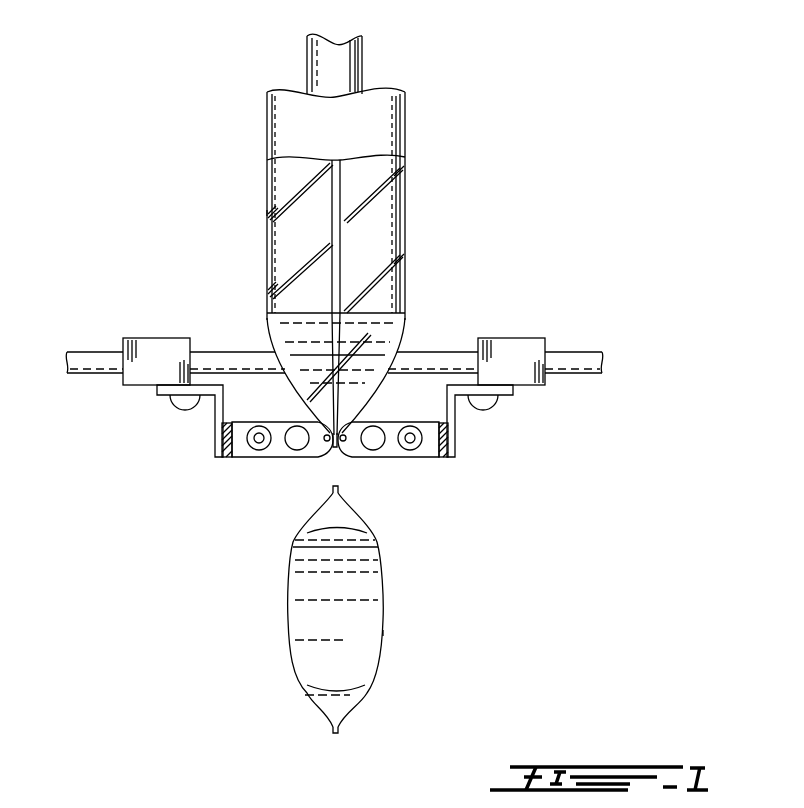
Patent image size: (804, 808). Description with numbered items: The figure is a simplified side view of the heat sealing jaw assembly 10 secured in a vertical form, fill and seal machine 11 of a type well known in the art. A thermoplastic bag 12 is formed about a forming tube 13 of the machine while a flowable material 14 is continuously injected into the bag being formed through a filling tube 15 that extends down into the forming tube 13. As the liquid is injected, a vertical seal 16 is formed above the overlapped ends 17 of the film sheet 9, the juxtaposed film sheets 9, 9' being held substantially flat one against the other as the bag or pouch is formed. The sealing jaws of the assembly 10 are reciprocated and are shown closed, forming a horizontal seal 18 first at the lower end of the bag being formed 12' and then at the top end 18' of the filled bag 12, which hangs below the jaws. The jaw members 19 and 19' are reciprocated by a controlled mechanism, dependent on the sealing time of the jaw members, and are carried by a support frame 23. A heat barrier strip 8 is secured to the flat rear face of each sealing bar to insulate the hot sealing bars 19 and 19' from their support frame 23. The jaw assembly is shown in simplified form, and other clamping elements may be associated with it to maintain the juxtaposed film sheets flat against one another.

The heat barrier strip 8 is at (227, 457).
The film sheet 9 is at (233, 423).
The film sheet 9' is at (428, 636).
The heat sealing jaw assembly 10 is at (507, 440).
The vertical form, fill and seal machine 11 is at (437, 177).
The thermoplastic bag 12 is at (298, 610).
The bag being formed 12' is at (287, 378).
The forming tube 13 is at (348, 118).
The flowable material 14 is at (397, 325).
The filling tube 15 is at (350, 63).
The vertical seal 16 is at (330, 175).
The overlapped ends 17 is at (270, 283).
The horizontal seal 18 is at (396, 734).
The top end 18' is at (305, 493).
The jaw member 19 is at (260, 475).
The jaw member 19' is at (419, 475).
The support frame 23 is at (207, 400).